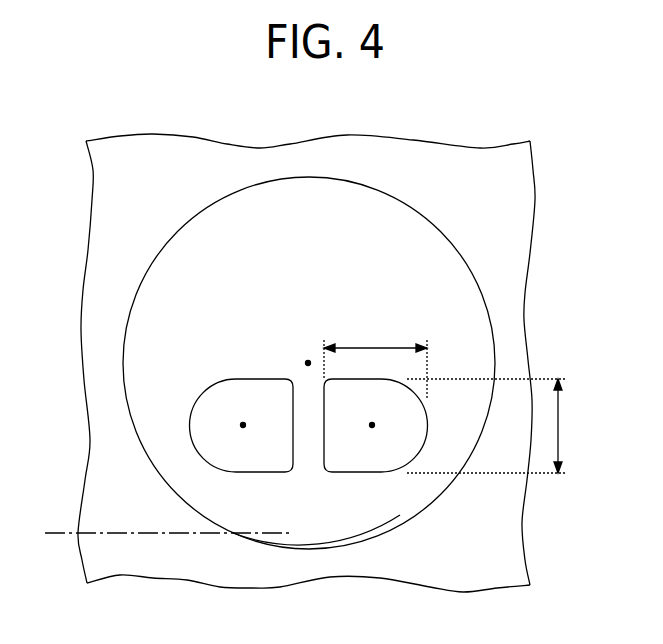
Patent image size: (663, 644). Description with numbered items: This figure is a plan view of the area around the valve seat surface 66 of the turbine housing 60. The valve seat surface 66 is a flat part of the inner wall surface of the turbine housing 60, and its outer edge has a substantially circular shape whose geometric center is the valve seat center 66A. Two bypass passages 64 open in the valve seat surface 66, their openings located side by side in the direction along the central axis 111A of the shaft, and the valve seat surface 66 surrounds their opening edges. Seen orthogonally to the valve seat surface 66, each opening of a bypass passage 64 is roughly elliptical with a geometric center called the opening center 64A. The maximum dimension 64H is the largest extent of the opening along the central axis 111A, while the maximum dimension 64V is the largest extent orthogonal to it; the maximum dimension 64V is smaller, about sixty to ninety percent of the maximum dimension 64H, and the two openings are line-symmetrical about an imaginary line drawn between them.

The turbine housing 60 is at (436, 221).
The bypass passage 64 is at (194, 435).
The opening center 64A is at (243, 428).
The maximum dimension 64H is at (378, 346).
The maximum dimension 64V is at (560, 425).
The valve seat surface 66 is at (402, 515).
The valve seat center 66A is at (305, 362).
The central axis 111A is at (50, 536).